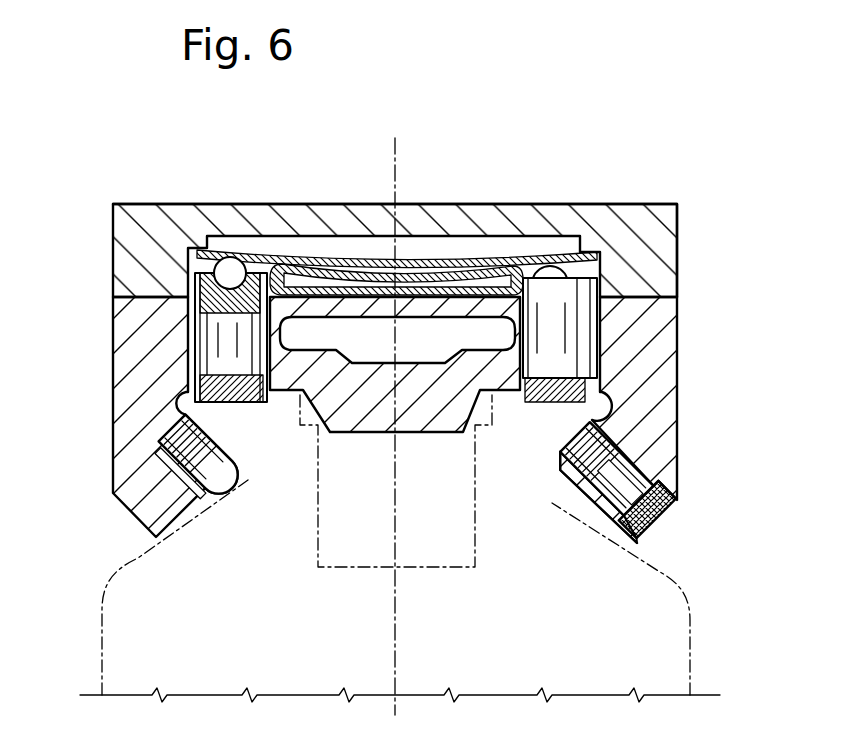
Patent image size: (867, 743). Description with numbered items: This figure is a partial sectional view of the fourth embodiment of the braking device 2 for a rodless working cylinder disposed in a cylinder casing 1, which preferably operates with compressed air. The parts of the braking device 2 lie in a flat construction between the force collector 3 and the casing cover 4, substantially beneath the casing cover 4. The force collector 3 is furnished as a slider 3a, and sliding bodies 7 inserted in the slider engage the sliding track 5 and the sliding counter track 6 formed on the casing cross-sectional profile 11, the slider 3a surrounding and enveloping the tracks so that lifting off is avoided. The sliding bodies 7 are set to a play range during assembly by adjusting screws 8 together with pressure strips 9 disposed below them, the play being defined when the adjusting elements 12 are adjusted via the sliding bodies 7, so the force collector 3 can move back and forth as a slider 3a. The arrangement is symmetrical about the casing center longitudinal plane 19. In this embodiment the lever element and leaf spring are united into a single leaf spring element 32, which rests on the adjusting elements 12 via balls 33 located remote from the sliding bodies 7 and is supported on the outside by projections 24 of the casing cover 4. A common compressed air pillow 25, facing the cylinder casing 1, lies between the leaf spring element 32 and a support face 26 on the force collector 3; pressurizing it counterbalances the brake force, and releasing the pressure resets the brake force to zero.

The cylinder casing 1 is at (690, 680).
The braking device 2 is at (427, 200).
The force collector 3 is at (680, 346).
The slider 3a is at (650, 298).
The casing cover 4 is at (140, 252).
The sliding track 5 is at (551, 404).
The sliding counter track 6 is at (560, 456).
The sliding body 7 is at (190, 445).
The adjusting screw 8 is at (670, 502).
The pressure strip 9 is at (178, 472).
The casing cross-sectional profile 11 is at (690, 617).
The adjusting element 12 is at (222, 335).
The casing center longitudinal plane 19 is at (394, 150).
The projection 24 is at (203, 243).
The compressed air pillow 25 is at (374, 268).
The support face 26 is at (461, 306).
The leaf spring element 32 is at (322, 258).
The ball 33 is at (235, 262).